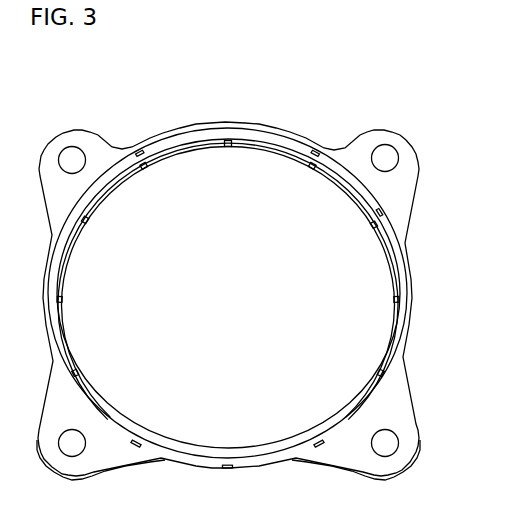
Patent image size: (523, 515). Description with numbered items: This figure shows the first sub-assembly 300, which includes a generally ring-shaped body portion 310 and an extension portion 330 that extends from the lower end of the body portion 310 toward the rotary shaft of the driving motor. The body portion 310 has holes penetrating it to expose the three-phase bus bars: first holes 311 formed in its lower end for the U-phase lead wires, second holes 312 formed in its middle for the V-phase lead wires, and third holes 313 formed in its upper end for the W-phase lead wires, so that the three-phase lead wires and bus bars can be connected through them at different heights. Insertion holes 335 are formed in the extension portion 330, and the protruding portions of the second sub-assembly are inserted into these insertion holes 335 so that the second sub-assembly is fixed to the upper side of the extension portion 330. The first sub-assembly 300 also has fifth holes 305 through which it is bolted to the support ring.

The first sub-assembly 300 is at (110, 104).
The fifth holes 305 is at (387, 160).
The body portion 310 is at (257, 126).
The first holes 311 is at (228, 147).
The second holes 312 is at (303, 143).
The third holes 313 is at (139, 150).
The extension portion 330 is at (283, 160).
The insertion holes 335 is at (307, 168).